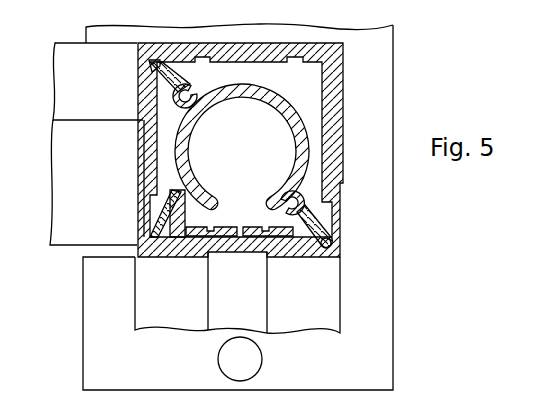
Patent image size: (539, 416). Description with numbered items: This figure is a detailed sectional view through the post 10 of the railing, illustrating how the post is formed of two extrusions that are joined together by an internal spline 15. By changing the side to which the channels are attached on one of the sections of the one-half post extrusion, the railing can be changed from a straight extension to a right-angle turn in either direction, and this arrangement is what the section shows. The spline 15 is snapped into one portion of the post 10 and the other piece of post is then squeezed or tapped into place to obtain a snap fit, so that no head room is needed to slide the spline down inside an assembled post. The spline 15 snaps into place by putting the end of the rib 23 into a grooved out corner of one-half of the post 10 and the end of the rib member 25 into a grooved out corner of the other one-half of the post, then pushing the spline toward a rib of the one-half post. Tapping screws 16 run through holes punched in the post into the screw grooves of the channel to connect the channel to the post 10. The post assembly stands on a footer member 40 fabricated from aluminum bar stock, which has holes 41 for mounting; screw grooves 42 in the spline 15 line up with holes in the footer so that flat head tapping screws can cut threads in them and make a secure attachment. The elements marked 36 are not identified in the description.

The post 10 is at (344, 208).
The spline 15 is at (293, 161).
The tapping screws 16 is at (218, 228).
The rib 23 is at (330, 245).
The rib member 25 is at (151, 60).
The sealing blocks 36 is at (60, 86).
The footer member 40 is at (394, 294).
The holes 41 is at (262, 356).
The screw grooves 42 is at (187, 92).